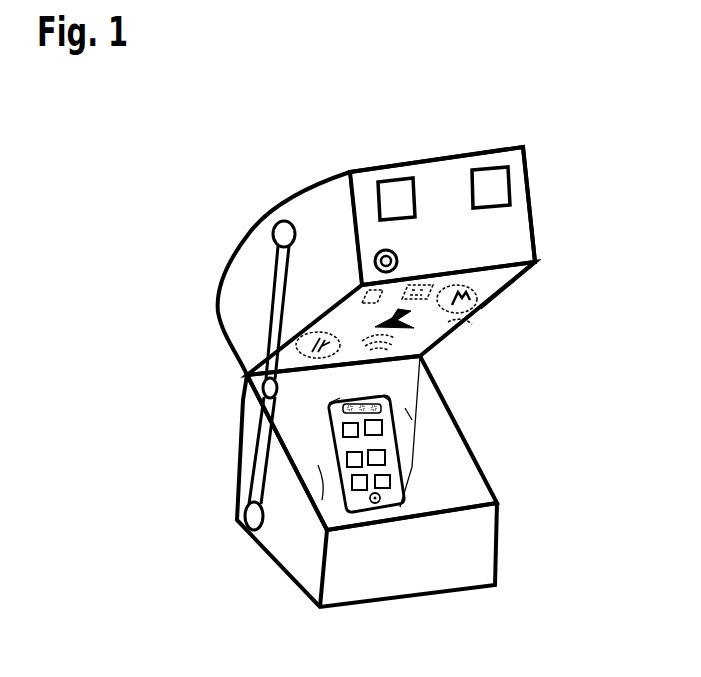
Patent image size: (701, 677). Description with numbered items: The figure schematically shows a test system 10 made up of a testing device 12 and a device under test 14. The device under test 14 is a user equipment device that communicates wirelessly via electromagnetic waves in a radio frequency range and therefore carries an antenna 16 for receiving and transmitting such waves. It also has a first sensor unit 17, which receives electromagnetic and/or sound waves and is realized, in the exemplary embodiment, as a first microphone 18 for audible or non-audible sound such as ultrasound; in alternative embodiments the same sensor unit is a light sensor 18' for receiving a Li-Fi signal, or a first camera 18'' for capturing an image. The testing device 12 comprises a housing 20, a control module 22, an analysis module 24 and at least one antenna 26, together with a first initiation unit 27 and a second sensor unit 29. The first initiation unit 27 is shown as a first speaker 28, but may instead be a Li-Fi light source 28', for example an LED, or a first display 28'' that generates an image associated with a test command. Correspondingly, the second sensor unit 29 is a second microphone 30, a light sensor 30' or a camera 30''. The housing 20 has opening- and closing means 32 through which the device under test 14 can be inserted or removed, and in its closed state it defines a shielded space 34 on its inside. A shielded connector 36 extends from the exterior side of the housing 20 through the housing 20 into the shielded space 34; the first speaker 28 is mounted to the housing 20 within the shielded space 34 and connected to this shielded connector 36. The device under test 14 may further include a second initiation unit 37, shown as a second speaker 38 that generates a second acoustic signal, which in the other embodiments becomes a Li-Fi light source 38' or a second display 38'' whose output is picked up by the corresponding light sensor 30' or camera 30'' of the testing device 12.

The test system 10 is at (160, 178).
The testing device 12 is at (509, 137).
The device under test 14 is at (440, 463).
The antenna 16 is at (397, 440).
The first sensor unit 17 is at (365, 536).
The first microphone 18 is at (455, 500).
The light sensor 18' is at (240, 402).
The first camera 18'' is at (516, 412).
The housing 20 is at (530, 167).
The control module 22 is at (391, 180).
The analysis module 24 is at (492, 167).
The antenna 26 is at (297, 338).
The first initiation unit 27 is at (276, 285).
The first speaker 28 is at (488, 336).
The Li-Fi light source 28' is at (260, 293).
The first display 28'' is at (313, 242).
The second sensor unit 29 is at (480, 263).
The second microphone 30 is at (531, 303).
The light sensor 30' is at (529, 241).
The camera 30'' is at (422, 188).
The opening- and closing means 32 is at (260, 487).
The shielded space 34 is at (337, 472).
The shielded connector 36 is at (376, 254).
The second initiation unit 37 is at (329, 415).
The second speaker 38 is at (499, 380).
The Li-Fi light source 38' is at (232, 479).
The second display 38'' is at (499, 529).